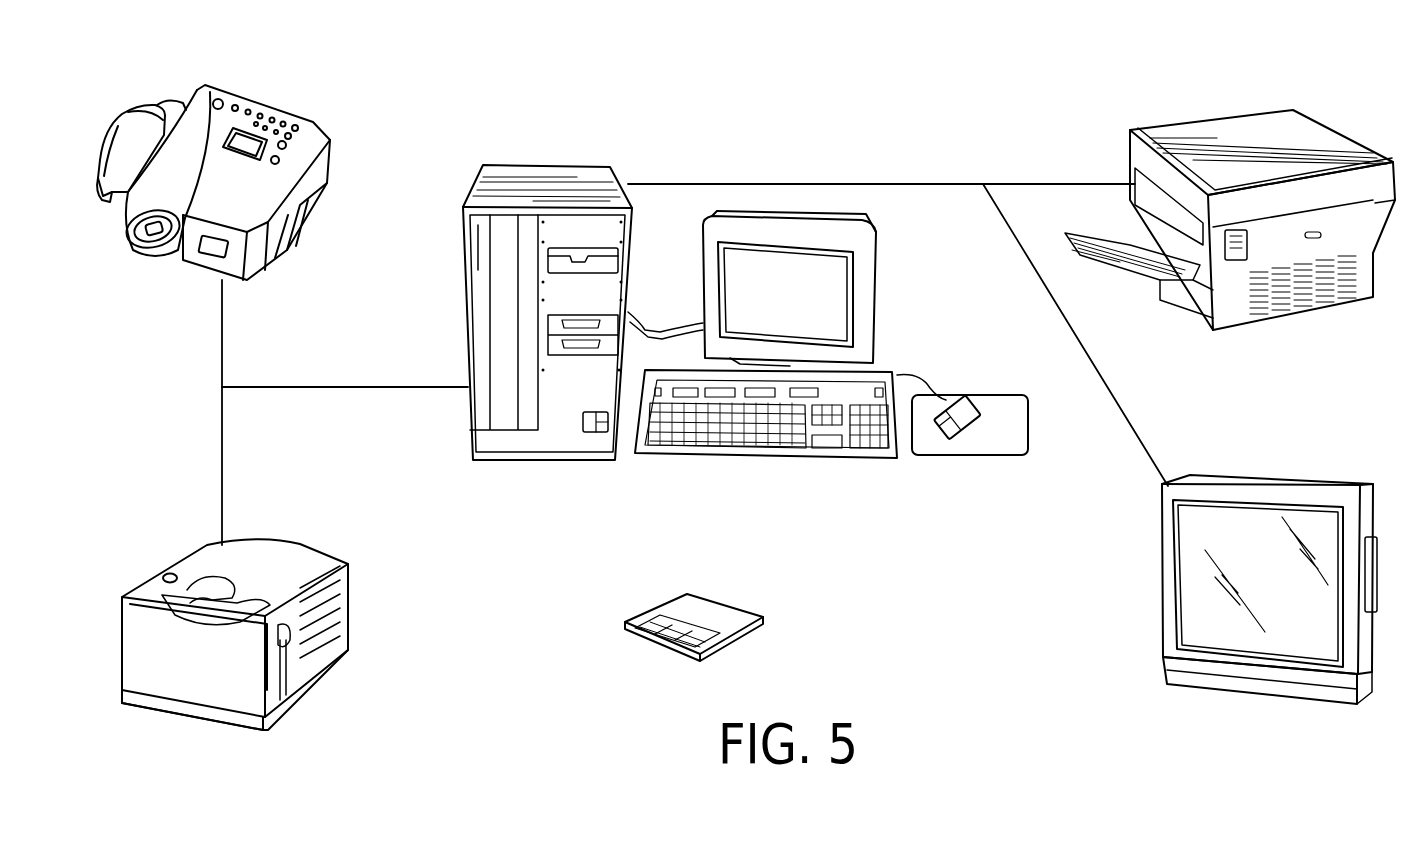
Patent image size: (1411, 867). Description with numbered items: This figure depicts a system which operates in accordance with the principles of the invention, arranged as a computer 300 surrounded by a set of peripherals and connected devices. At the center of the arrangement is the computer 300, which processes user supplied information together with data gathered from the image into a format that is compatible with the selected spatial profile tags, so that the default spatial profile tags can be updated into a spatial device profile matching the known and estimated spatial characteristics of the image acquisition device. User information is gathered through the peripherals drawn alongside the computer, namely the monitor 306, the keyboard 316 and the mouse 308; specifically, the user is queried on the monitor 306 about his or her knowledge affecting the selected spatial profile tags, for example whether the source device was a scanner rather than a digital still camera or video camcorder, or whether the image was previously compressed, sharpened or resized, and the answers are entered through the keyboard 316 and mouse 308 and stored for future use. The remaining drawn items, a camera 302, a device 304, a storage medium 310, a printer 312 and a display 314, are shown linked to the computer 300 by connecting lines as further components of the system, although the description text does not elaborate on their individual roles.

The computer 300 is at (550, 165).
The digital camera 302 is at (285, 110).
The printer 304 is at (318, 550).
The monitor 306 is at (880, 300).
The mouse 308 is at (965, 395).
The removable storage medium 310 is at (720, 606).
The printer 312 is at (1128, 148).
The television/display 314 is at (1162, 593).
The keyboard 316 is at (678, 458).